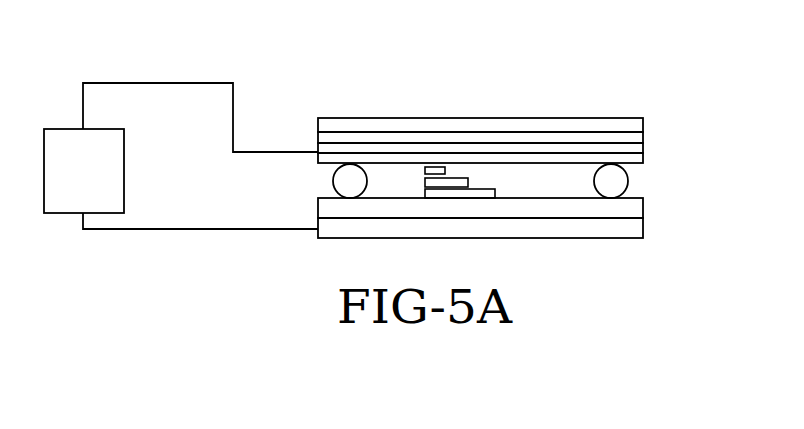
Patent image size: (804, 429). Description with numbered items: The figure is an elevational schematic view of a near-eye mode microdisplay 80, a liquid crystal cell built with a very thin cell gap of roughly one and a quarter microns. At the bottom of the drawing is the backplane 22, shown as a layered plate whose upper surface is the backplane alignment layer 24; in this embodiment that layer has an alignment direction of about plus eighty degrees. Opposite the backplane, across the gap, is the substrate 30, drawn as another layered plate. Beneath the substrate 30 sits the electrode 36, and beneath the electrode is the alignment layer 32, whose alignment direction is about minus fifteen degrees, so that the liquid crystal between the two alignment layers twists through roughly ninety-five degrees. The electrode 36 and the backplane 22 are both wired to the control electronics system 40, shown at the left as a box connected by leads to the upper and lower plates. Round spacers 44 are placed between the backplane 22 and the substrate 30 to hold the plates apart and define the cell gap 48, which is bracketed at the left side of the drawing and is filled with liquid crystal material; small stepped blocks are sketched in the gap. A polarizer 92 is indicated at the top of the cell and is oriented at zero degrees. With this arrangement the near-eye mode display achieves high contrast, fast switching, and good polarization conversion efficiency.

The backplane 22 is at (627, 230).
The backplane alignment layer 24 is at (632, 203).
The substrate 30 is at (615, 135).
The alignment layer 32 is at (630, 157).
The electrode 36 is at (628, 150).
The control electronics system 40 is at (105, 168).
The spacers 44 is at (609, 185).
The gap 48 is at (312, 167).
The near-eye mode microdisplay 80 is at (456, 82).
The polarizer 92 is at (583, 115).